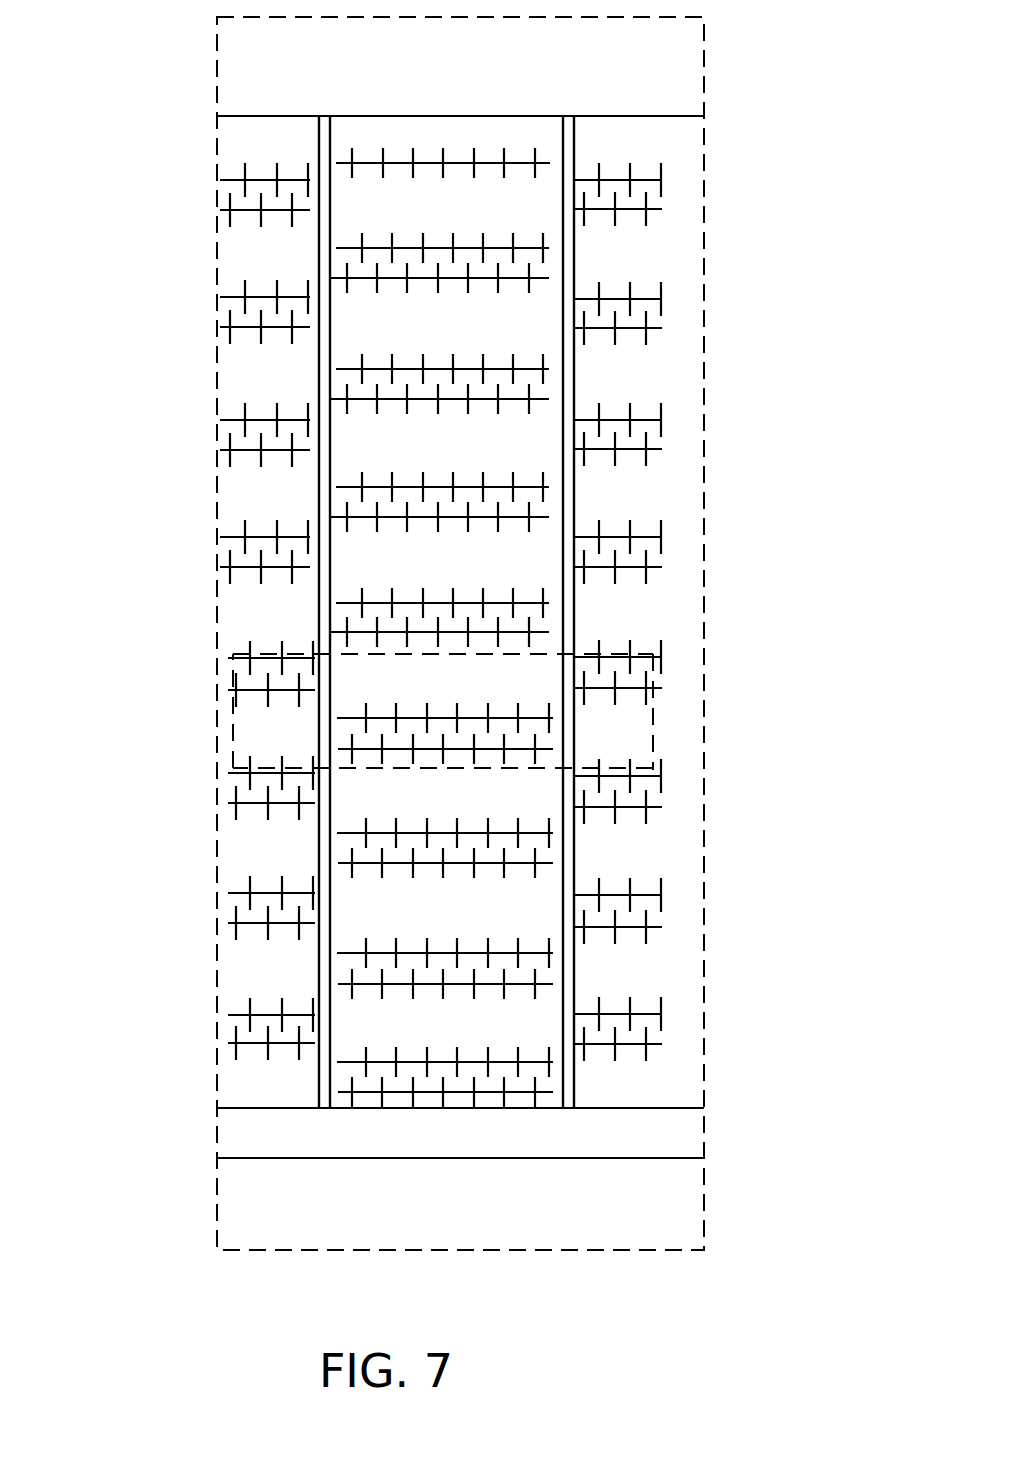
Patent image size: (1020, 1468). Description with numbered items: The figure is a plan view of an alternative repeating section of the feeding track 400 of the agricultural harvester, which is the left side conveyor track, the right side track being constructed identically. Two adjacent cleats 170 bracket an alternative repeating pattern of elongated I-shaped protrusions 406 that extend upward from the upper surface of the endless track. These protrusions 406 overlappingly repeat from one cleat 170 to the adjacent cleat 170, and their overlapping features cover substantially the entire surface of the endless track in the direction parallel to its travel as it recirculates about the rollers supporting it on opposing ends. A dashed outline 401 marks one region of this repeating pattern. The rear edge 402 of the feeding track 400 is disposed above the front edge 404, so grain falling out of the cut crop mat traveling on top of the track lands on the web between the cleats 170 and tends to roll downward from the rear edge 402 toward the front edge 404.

The feeding track 400 is at (98, 308).
The rear edge 402 is at (258, 116).
The front edge 404 is at (424, 1158).
The cleats 170 is at (318, 148).
The unit cell region 401 is at (653, 712).
The elongated I-shaped protrusions 406 is at (667, 927).